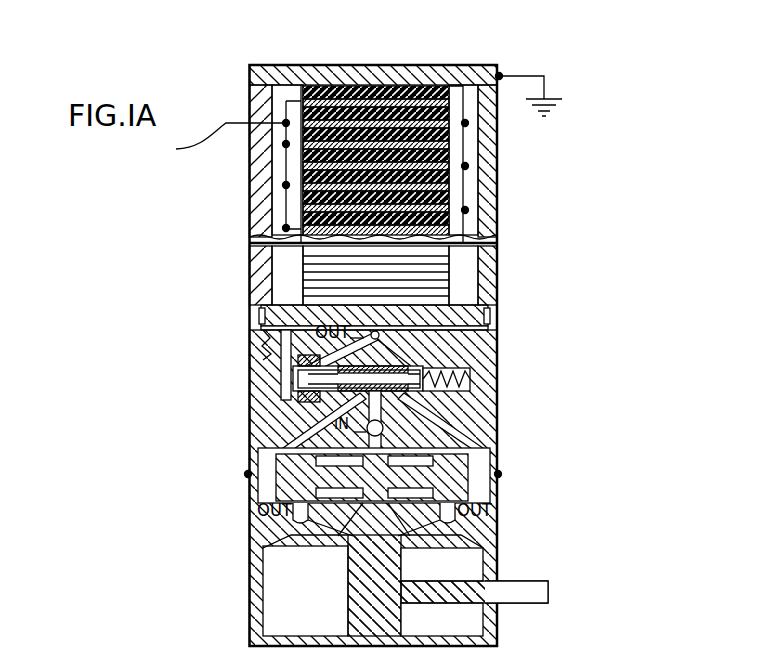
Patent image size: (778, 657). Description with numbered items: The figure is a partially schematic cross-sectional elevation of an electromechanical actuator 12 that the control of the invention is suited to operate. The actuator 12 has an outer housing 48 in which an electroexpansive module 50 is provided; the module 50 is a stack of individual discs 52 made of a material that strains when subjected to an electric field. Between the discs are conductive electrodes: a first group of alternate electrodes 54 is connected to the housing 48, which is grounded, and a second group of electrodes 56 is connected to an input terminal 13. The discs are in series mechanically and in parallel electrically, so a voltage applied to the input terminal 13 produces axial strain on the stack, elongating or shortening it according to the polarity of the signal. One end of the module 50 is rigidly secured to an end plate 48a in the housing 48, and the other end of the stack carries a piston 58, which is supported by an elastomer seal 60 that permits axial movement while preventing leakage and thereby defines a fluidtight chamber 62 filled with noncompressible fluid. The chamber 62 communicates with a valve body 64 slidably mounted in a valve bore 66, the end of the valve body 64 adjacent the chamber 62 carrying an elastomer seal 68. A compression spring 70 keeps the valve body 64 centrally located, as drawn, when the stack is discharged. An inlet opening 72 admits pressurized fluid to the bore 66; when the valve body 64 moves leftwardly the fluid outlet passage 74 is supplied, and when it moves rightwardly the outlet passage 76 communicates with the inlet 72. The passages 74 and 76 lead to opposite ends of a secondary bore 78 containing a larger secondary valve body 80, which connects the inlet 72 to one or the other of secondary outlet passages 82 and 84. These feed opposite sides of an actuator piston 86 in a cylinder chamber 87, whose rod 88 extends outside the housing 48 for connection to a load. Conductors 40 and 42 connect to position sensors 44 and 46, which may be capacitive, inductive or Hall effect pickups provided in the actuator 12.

The actuator 12 is at (494, 241).
The input terminal 13 is at (220, 141).
The conductor 40 is at (240, 466).
The conductor 42 is at (492, 466).
The position sensor 44 is at (246, 478).
The position sensor 46 is at (486, 478).
The outer housing 48 is at (252, 198).
The end plate 48a is at (409, 69).
The electroexpansive module 50 is at (446, 188).
The individual discs 52 is at (441, 139).
The first group of alternate electrodes 54 is at (441, 184).
The second group of electrodes 56 is at (291, 151).
The piston 58 is at (470, 298).
The elastomer seal 60 is at (258, 307).
The fluidtight chamber 62 is at (478, 341).
The valve body 64 is at (367, 342).
The valve bore 66 is at (447, 356).
The elastomer seal 68 is at (288, 389).
The compression spring 70 is at (381, 393).
The inlet opening 72 is at (376, 421).
The fluid outlet passage 74 is at (470, 432).
The outlet passage 76 is at (282, 433).
The secondary bore 78 is at (248, 500).
The secondary valve body 80 is at (338, 520).
The secondary outlet passage 82 is at (442, 585).
The secondary outlet passage 84 is at (305, 585).
The actuator piston 86 is at (342, 596).
The cylinder chamber 87 is at (409, 520).
The rod 88 is at (520, 573).